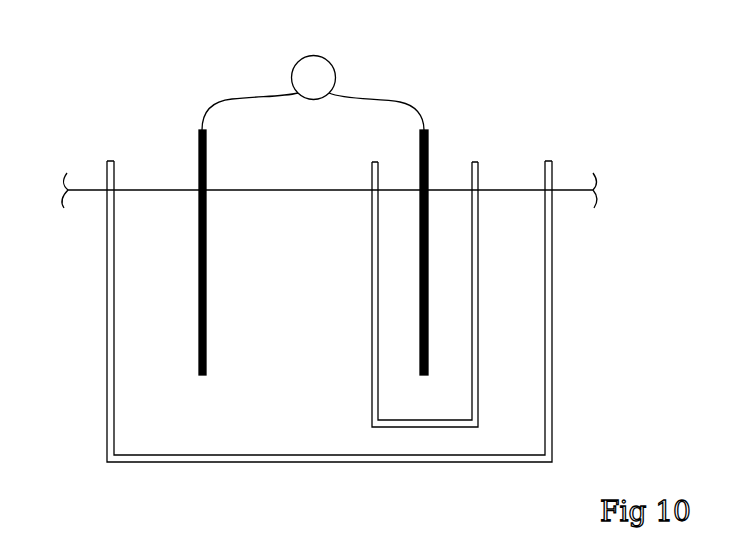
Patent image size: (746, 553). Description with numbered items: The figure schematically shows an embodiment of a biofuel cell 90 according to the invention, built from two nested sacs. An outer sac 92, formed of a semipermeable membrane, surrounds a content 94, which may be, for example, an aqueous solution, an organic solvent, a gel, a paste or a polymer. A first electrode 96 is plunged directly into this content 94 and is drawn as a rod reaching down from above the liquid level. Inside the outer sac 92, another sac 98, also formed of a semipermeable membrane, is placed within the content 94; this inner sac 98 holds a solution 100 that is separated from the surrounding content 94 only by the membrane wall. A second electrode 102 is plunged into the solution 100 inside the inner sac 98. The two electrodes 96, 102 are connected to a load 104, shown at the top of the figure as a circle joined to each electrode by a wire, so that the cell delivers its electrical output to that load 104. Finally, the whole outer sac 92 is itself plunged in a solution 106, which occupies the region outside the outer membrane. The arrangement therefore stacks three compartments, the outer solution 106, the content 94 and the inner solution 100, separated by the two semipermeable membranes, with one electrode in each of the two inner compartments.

The biofuel cell 90 is at (547, 65).
The sac 92 is at (107, 272).
The content 94 is at (133, 350).
The electrode 96 is at (199, 135).
The sac 98 is at (478, 317).
The solution 100 is at (399, 202).
The electrode 102 is at (428, 137).
The load 104 is at (336, 66).
The solution 106 is at (571, 249).